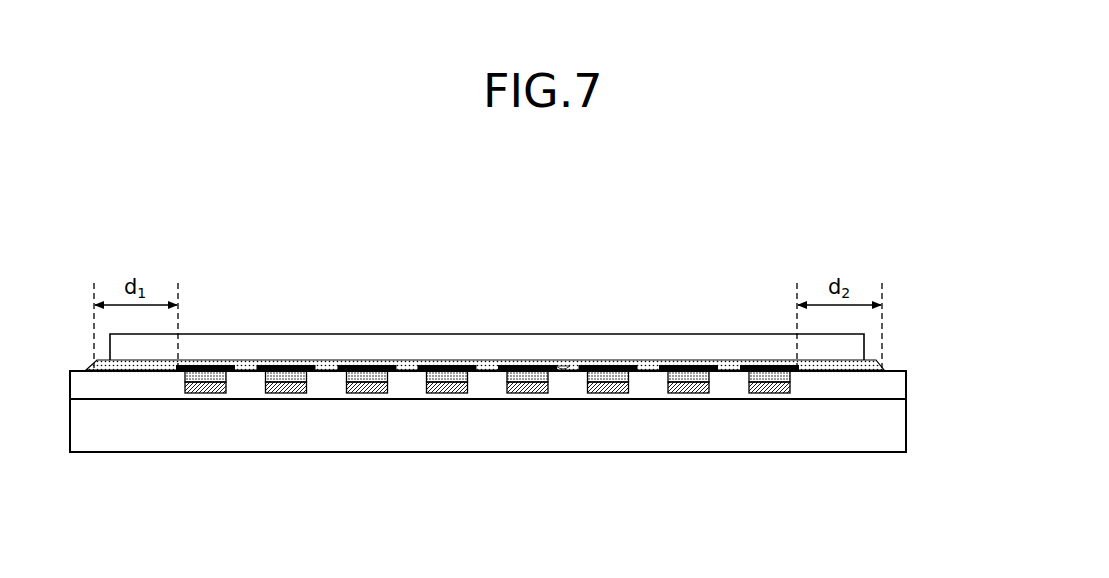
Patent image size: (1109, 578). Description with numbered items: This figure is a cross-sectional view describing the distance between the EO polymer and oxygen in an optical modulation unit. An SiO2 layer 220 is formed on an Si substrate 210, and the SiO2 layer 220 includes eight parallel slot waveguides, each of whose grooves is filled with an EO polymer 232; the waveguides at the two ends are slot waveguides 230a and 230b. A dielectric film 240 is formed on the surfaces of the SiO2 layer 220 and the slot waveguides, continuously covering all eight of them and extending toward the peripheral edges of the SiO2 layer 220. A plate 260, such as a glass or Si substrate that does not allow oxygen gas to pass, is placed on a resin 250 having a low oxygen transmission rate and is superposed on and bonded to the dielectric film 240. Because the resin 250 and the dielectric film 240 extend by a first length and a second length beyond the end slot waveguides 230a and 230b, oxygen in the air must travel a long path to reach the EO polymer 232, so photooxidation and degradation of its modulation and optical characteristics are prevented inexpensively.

The Si substrate 210 is at (906, 425).
The SiO2 layer 220 is at (906, 385).
The slot waveguide 230a is at (227, 380).
The slot waveguide 230b is at (792, 378).
The EO polymer 232 is at (207, 366).
The dielectric film 240 is at (886, 370).
The resin 250 is at (563, 366).
The plate 260 is at (696, 334).